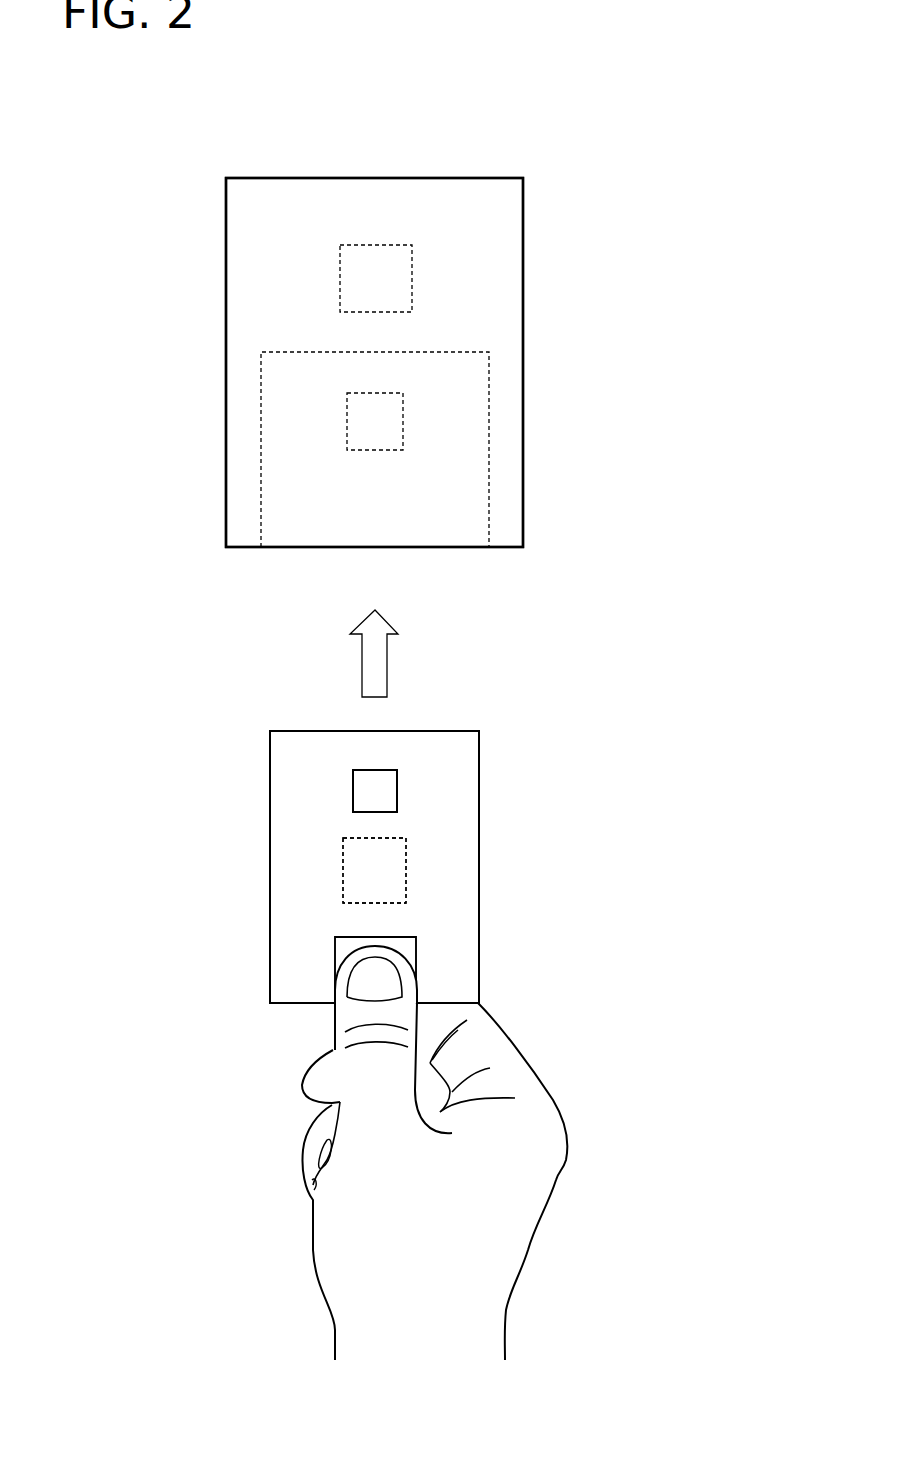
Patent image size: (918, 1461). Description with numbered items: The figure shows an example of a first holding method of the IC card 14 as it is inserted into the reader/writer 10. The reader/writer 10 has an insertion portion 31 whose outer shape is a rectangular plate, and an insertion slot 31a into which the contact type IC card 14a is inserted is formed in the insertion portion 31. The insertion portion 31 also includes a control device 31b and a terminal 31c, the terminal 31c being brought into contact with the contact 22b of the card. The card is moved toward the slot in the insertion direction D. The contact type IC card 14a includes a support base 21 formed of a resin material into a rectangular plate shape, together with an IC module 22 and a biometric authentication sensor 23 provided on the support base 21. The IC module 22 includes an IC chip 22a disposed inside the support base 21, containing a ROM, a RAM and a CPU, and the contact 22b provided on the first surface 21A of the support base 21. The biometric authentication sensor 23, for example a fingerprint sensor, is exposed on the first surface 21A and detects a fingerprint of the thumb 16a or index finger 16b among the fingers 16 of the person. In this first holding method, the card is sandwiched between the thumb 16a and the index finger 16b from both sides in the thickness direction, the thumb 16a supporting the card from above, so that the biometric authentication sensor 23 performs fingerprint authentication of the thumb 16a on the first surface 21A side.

The reader/writer 10 is at (224, 177).
The insertion portion 31 is at (498, 290).
The insertion slot 31a is at (287, 547).
The control device 31b is at (340, 280).
The terminal 31c is at (347, 420).
The insertion direction D is at (387, 672).
The contact type IC card 14a is at (270, 731).
The IC card 14 is at (374, 867).
The support base 21 is at (479, 731).
The first surface 21A is at (455, 853).
The IC module 22 is at (190, 715).
The IC chip 22a is at (343, 873).
The contact 22b is at (353, 790).
The biometric authentication sensor 23 is at (412, 943).
The fingers 16 is at (376, 1094).
The thumb 16a is at (374, 970).
The index finger 16b is at (438, 1018).